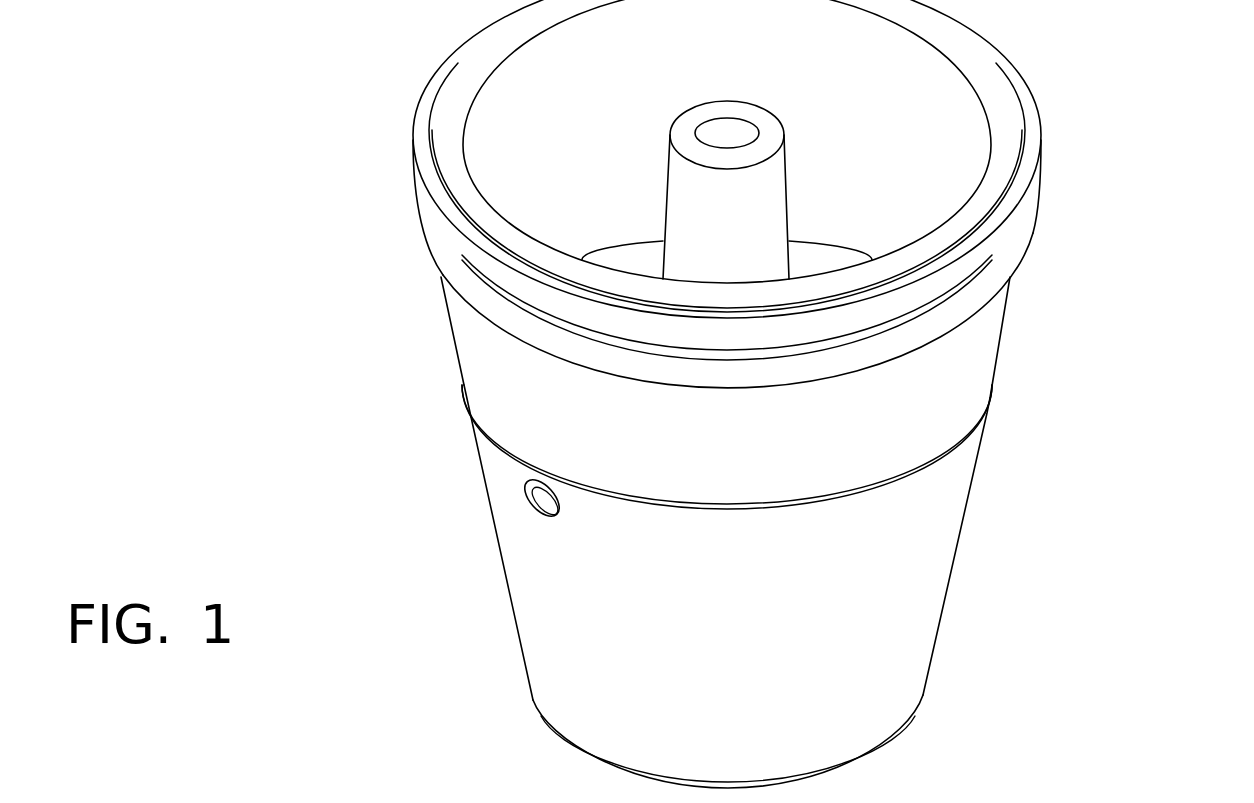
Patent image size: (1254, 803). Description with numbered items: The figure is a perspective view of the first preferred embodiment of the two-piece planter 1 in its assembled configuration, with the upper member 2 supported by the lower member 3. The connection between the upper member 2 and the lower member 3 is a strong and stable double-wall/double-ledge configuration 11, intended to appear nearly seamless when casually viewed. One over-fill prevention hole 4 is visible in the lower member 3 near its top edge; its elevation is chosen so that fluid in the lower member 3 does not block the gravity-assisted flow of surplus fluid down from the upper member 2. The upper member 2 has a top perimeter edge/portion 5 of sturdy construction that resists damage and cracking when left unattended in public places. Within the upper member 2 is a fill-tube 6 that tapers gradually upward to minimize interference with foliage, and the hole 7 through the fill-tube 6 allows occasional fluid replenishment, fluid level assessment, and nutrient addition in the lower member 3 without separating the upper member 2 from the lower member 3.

The two-piece planter 1 is at (312, 104).
The upper member 2 is at (965, 355).
The lower member 3 is at (930, 572).
The over-fill prevention hole 4 is at (532, 506).
The top perimeter edge/portion 5 is at (1065, 73).
The fill-tube 6 is at (690, 228).
The hole 7 is at (725, 126).
The double-wall/double-ledge configuration 11 is at (530, 440).